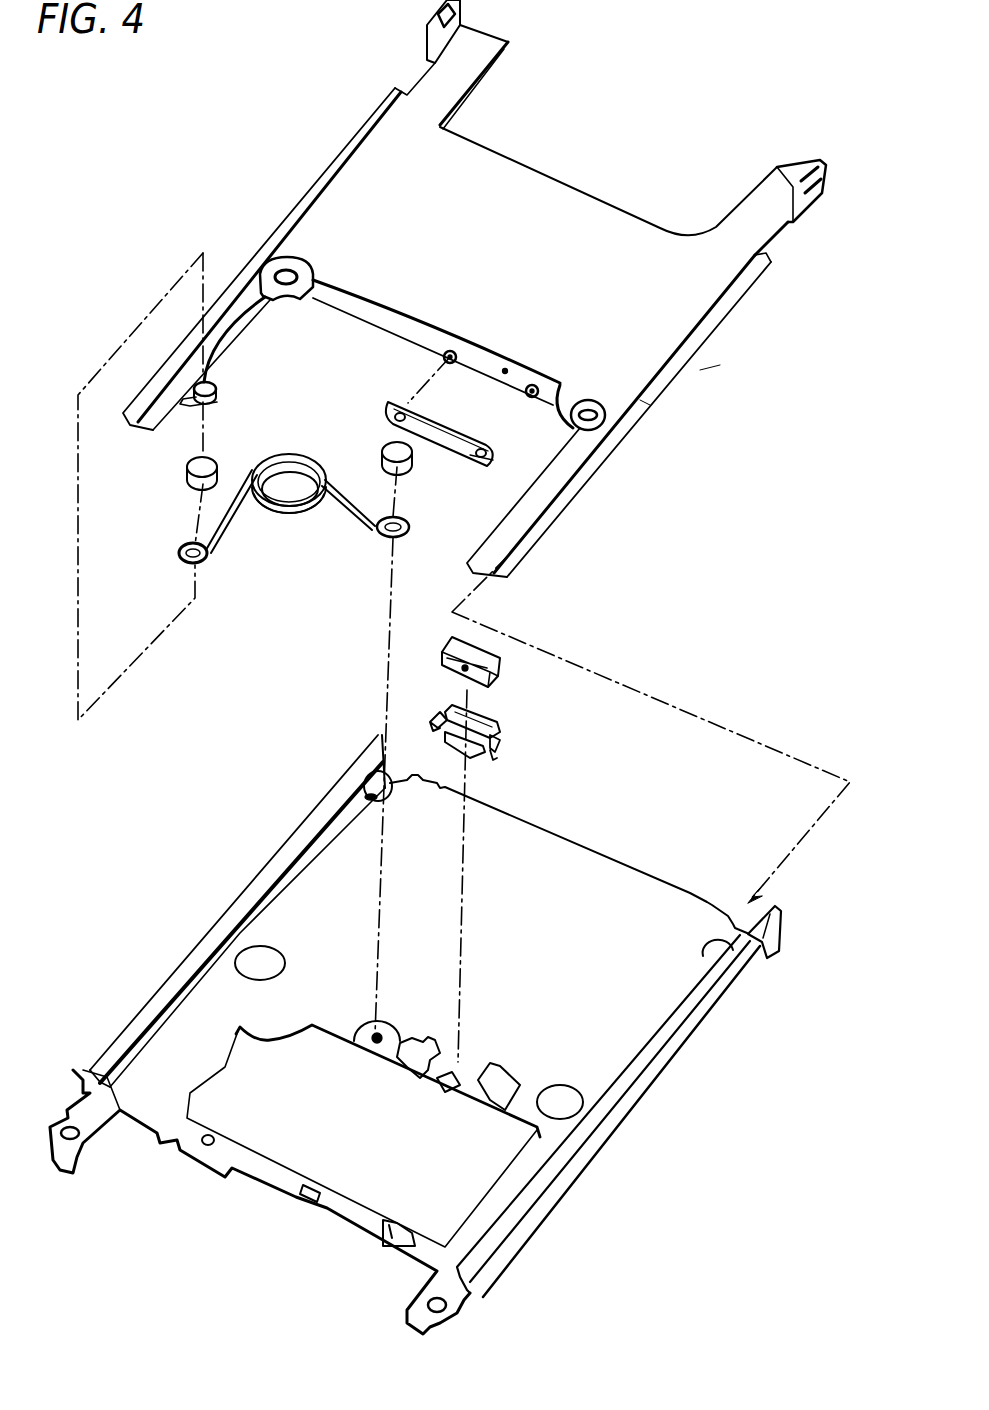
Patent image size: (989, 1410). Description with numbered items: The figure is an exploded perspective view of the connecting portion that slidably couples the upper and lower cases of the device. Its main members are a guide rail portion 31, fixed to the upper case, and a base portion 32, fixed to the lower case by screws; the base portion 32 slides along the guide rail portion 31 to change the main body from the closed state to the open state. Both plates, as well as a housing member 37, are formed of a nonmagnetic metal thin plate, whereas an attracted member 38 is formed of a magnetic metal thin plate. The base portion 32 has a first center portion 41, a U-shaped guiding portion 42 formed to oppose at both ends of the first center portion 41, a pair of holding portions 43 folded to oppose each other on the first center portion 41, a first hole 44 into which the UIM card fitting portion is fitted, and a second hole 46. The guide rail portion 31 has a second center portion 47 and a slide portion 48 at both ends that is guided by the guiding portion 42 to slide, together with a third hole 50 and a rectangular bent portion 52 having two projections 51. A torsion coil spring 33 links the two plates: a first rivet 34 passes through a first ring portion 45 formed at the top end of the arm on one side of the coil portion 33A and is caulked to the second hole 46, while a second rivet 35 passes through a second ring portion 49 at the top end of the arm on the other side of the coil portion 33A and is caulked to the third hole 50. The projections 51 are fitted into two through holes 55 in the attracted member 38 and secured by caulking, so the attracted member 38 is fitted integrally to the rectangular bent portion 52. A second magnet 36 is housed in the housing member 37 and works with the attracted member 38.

The guide rail portion 31 is at (350, 200).
The base portion 32 is at (287, 915).
The torsion coil spring 33 is at (290, 529).
The coil portion 33A is at (273, 517).
The first rivet 34 is at (400, 457).
The second rivet 35 is at (193, 467).
The second magnet 36 is at (498, 673).
The housing member 37 is at (498, 740).
The attracted member 38 is at (470, 455).
The first center portion 41 is at (607, 1007).
The U-shaped guiding portion 42 is at (715, 990).
The holding portions 43 is at (573, 1107).
The first hole 44 is at (473, 1170).
The first ring portion 45 is at (382, 547).
The second hole 46 is at (368, 1060).
The second center portion 47 is at (605, 323).
The slide portion 48 is at (645, 403).
The second ring portion 49 is at (203, 570).
The third hole 50 is at (217, 388).
The projections 51 is at (450, 357).
The rectangular bent portion 52 is at (373, 313).
The through holes 55 is at (390, 420).